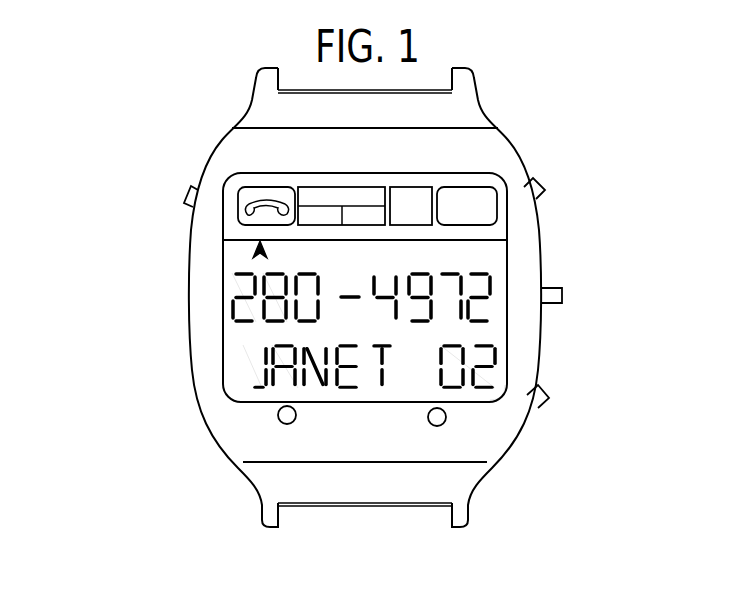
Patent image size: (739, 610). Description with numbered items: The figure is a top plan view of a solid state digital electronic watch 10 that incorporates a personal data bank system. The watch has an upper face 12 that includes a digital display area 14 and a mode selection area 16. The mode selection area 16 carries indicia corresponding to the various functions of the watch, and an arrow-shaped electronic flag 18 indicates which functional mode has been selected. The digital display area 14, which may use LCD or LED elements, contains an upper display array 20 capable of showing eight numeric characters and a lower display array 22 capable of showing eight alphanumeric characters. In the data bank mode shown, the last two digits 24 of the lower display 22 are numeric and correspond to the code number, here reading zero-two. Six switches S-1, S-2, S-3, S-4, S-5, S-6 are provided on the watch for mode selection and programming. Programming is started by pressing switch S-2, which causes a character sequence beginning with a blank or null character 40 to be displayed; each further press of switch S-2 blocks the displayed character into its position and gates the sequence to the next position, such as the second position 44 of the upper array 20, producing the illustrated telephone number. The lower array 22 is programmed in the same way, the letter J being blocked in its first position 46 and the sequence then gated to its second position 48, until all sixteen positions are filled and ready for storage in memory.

The digital electronic watch 10 is at (196, 97).
The upper face 12 is at (504, 184).
The digital display area 14 is at (490, 333).
The mode selection area 16 is at (497, 227).
The electronic flag 18 is at (255, 253).
The upper display array 20 is at (233, 287).
The lower display array 22 is at (243, 372).
The last two digits 24 is at (487, 385).
The blank or null character 40 is at (248, 322).
The second position 44 is at (283, 322).
The first position 46 is at (252, 380).
The second position 48 is at (275, 384).
The switch S-1 is at (548, 195).
The switch S-2 is at (562, 300).
The switch S-3 is at (545, 403).
The switch S-4 is at (190, 205).
The switch S-5 is at (296, 418).
The switch S-6 is at (446, 418).